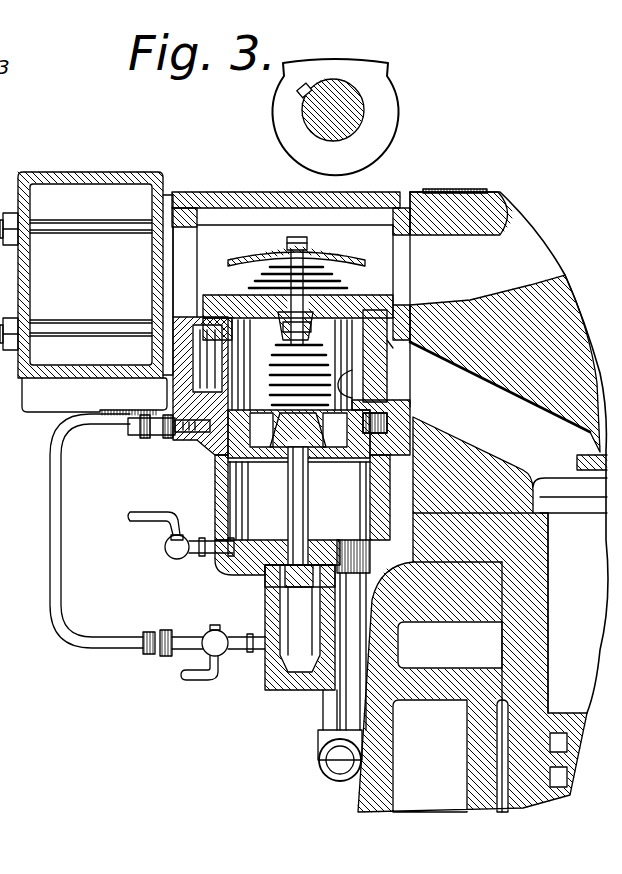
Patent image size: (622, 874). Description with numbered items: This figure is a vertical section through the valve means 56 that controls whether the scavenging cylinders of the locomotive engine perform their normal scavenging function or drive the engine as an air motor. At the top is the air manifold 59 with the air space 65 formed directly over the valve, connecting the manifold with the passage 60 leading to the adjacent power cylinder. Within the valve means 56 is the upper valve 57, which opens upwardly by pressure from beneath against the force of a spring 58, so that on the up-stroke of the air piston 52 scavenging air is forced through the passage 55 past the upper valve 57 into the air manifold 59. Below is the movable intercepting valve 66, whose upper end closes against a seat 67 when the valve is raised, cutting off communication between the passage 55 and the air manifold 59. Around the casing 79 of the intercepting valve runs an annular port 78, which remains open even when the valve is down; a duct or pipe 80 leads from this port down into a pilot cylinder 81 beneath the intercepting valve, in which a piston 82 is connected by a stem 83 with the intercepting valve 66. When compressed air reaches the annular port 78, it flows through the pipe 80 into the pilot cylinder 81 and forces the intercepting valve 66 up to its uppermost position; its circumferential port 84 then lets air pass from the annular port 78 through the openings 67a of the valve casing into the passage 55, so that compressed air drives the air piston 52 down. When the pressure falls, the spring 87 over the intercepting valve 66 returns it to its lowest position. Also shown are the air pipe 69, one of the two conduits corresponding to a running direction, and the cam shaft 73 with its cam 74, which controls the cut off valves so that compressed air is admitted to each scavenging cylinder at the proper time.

The air piston 52 is at (557, 727).
The passage 55 is at (518, 430).
The valve means 56 is at (192, 596).
The upper valve 57 is at (212, 287).
The spring 58 is at (266, 273).
The air manifold 59 is at (83, 293).
The passage 60 is at (509, 451).
The air space 65 is at (323, 286).
The intercepting valve 66 is at (250, 455).
The seat 67 is at (400, 298).
The openings of the valve casing 67a is at (392, 348).
The air pipe 69 is at (326, 776).
The cam shaft 73 is at (343, 115).
The cam 74 is at (392, 90).
The annular port 78 is at (187, 440).
The casing 79 is at (207, 437).
The duct or pipe 80 is at (60, 492).
The pilot cylinder 81 is at (305, 635).
The piston 82 is at (268, 565).
The stem 83 is at (300, 480).
The circumferential port 84 is at (388, 370).
The spring 87 is at (323, 343).